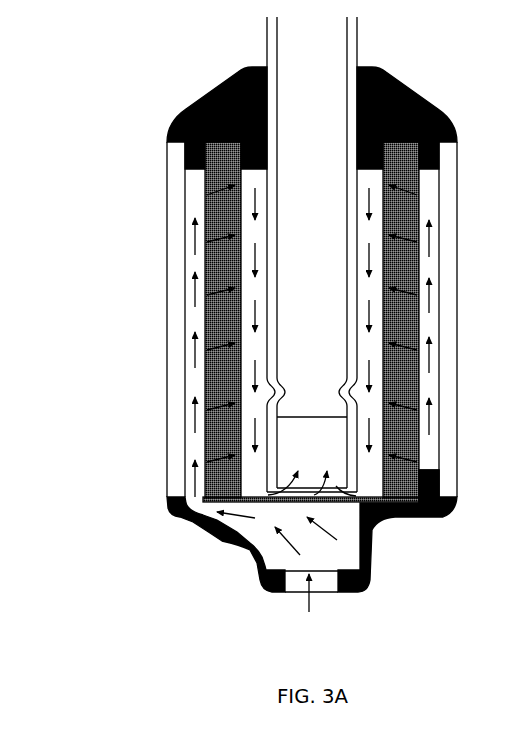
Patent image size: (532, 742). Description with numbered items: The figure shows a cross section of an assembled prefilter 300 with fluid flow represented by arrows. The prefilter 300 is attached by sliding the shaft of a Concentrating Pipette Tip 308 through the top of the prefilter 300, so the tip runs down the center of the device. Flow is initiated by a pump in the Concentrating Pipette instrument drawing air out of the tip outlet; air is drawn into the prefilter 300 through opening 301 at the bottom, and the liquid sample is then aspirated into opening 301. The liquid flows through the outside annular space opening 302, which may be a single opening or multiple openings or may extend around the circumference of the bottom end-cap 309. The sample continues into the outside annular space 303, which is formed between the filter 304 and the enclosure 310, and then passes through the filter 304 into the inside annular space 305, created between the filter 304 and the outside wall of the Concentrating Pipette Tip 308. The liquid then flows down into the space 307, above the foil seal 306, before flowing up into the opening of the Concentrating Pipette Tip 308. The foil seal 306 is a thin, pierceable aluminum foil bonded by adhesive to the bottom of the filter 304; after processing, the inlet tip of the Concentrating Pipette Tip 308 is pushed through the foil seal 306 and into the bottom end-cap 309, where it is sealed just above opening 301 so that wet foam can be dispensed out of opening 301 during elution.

The prefilter 300 is at (475, 93).
The opening 301 is at (322, 595).
The outside annular space opening 302 is at (203, 510).
The outside annular space 303 is at (192, 385).
The filter 304 is at (220, 320).
The inside annular space 305 is at (250, 202).
The foil seal 306 is at (353, 497).
The space 307 is at (313, 492).
The Concentrating Pipette Tip 308 is at (313, 367).
The bottom end-cap 309 is at (233, 543).
The enclosure 310 is at (173, 422).